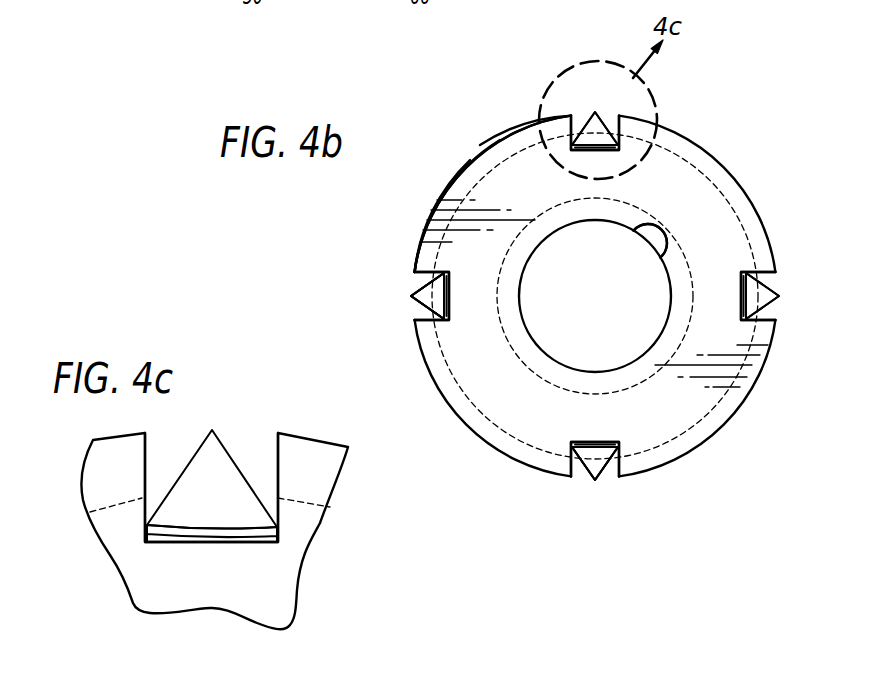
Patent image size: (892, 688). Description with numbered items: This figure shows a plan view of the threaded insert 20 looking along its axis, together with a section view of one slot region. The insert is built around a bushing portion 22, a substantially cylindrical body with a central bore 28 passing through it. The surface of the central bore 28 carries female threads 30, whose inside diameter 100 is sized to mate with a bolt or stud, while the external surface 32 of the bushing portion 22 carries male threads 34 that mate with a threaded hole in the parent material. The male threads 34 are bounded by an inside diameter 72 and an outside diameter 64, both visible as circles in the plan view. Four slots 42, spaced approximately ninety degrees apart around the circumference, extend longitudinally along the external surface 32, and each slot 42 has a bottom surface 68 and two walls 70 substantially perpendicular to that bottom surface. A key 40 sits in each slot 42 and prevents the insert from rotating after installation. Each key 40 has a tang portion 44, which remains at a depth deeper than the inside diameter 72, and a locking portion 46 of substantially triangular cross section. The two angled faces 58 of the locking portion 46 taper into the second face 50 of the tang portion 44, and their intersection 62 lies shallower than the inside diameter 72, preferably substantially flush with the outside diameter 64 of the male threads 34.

In FIG. 4b, the threaded insert 20 is at (777, 131).
In FIG. 4b, the bushing portion 22 is at (483, 145).
In FIG. 4b, the central bore 28 is at (582, 315).
In FIG. 4b, the female threads 30 is at (660, 257).
In FIG. 4b, the inside diameter of the female threads 100 is at (650, 240).
In FIG. 4b, the external surface 32 is at (438, 192).
In FIG. 4b, the male threads 34 is at (537, 117).
In FIG. 4b, the key 40 is at (422, 300).
In FIG. 4b, the locking portion 46 is at (427, 296).
In FIG. 4b, the slot 42 is at (653, 117).
In FIG. 4c, the tang portion 44 is at (197, 532).
In FIG. 4b, the second face 50 is at (597, 140).
In FIG. 4b, the angled faces 58 is at (430, 283).
In FIG. 4b, the intersection 62 is at (416, 296).
In FIG. 4b, the outside diameter 64 is at (441, 190).
In FIG. 4c, the bottom surface 68 is at (218, 543).
In FIG. 4b, the walls 70 is at (571, 125).
In FIG. 4c, the walls 70 is at (145, 462).
In FIG. 4b, the inside diameter 72 is at (520, 145).